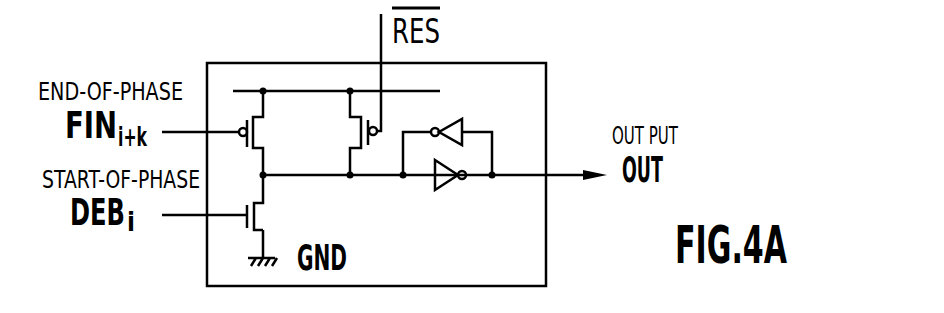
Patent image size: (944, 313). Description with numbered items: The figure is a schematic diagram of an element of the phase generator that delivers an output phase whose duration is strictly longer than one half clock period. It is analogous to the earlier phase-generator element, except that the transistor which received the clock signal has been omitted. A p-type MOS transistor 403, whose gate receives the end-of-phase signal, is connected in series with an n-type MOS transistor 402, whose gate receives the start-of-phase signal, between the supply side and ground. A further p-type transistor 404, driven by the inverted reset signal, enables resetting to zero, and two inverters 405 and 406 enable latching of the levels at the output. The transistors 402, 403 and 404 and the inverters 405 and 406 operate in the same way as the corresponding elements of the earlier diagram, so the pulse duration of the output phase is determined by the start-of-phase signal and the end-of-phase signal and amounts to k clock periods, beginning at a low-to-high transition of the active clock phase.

The n-type MOS transistor 402 is at (274, 219).
The p-type MOS transistor 403 is at (272, 134).
The p-type reset transistor 404 is at (400, 116).
The inverter 405 is at (474, 116).
The inverter 406 is at (446, 200).